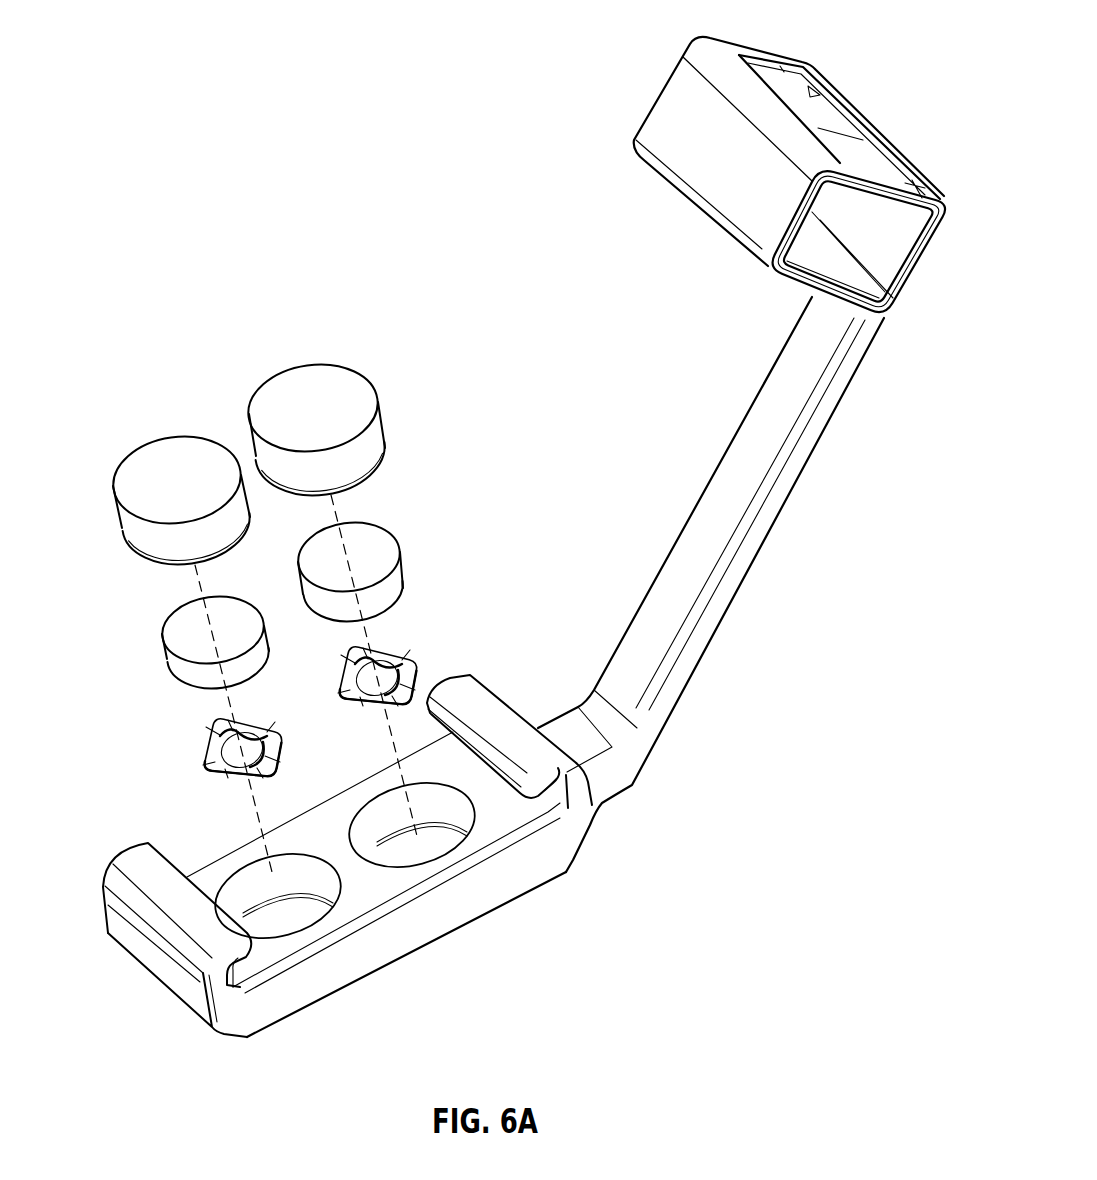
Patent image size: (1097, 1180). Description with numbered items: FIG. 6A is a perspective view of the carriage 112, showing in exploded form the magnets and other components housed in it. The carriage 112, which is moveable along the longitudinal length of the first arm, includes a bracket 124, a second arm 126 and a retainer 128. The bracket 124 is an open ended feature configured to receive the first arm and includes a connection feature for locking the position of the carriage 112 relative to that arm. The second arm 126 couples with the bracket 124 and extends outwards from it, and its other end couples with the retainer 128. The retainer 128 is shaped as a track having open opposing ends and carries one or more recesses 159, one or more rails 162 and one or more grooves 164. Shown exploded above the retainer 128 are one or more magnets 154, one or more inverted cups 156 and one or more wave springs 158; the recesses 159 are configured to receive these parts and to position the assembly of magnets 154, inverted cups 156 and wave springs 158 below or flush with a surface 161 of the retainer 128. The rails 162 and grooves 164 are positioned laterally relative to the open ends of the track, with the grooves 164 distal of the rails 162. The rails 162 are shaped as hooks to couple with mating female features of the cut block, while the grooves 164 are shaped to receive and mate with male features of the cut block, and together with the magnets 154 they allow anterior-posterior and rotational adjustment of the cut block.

The carriage 112 is at (496, 255).
The bracket 124 is at (668, 102).
The second arm 126 is at (762, 518).
The retainer 128 is at (527, 872).
The magnets 154 is at (187, 630).
The inverted cups 156 is at (135, 480).
The wave springs 158 is at (212, 730).
The recesses 159 is at (258, 925).
The surface 161 is at (488, 832).
The rails 162 is at (507, 737).
The grooves 164 is at (252, 963).